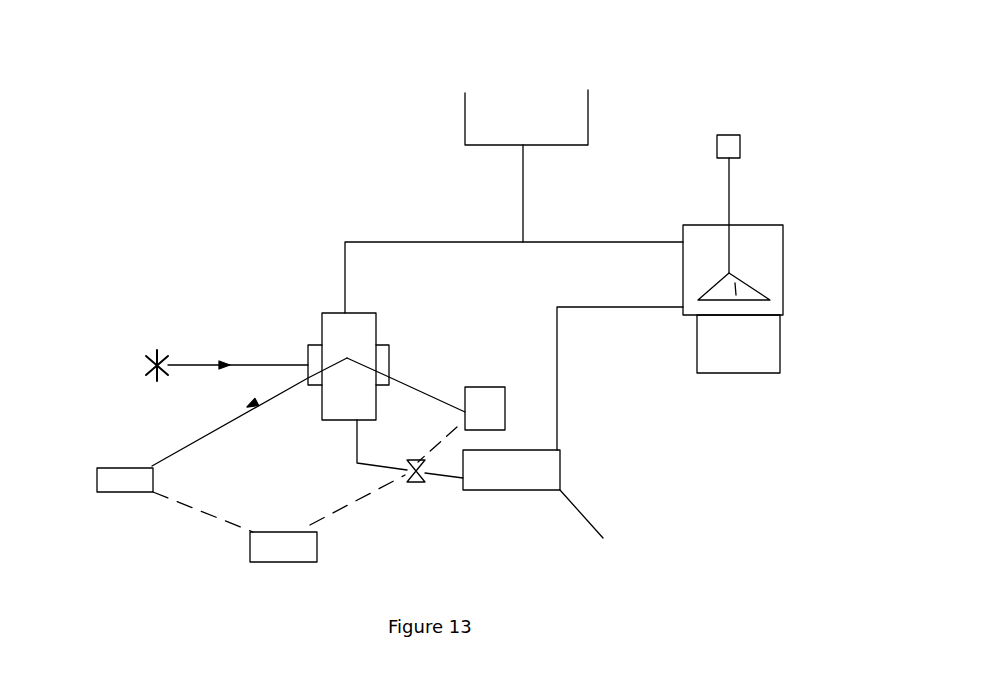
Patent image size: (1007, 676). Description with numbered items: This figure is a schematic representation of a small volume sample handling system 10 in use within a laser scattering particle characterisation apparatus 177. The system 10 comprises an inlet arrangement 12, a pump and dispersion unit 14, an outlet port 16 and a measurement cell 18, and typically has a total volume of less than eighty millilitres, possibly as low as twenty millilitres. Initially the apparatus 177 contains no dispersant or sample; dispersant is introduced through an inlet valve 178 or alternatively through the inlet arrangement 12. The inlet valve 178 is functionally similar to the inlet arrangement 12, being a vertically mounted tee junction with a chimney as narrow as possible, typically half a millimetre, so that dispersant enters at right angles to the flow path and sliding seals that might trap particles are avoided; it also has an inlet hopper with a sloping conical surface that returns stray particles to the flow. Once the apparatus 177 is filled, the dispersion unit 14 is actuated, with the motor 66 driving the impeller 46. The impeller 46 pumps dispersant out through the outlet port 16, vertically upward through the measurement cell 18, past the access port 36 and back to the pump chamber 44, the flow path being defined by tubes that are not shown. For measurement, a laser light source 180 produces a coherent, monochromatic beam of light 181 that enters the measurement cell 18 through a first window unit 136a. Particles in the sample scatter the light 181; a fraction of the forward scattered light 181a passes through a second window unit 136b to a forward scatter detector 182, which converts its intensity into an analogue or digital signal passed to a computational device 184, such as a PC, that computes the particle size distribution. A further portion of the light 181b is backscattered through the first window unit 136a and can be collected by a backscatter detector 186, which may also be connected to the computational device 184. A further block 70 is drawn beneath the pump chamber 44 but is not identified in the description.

The small volume sample handling system 10 is at (632, 132).
The inlet arrangement 12 is at (516, 79).
The pump and dispersion unit 14 is at (808, 272).
The outlet port 16 is at (588, 472).
The measurement cell 18 is at (307, 428).
The access port 36 is at (488, 95).
The pump chamber 44 is at (762, 247).
The impeller 46 is at (772, 302).
The motor 66 is at (747, 146).
The processor 70 is at (755, 358).
The first window unit 136a is at (310, 345).
The second window unit 136b is at (388, 340).
The laser scattering particle characterisation apparatus 177 is at (298, 206).
The inlet valve 178 is at (413, 488).
The laser light source 180 is at (135, 368).
The beam of light 181 is at (210, 358).
The forward scattered light 181a is at (435, 377).
The backscattered light 181b is at (175, 442).
The forward scatter detector 182 is at (482, 385).
The computational device 184 is at (287, 547).
The backscatter detector 186 is at (113, 482).